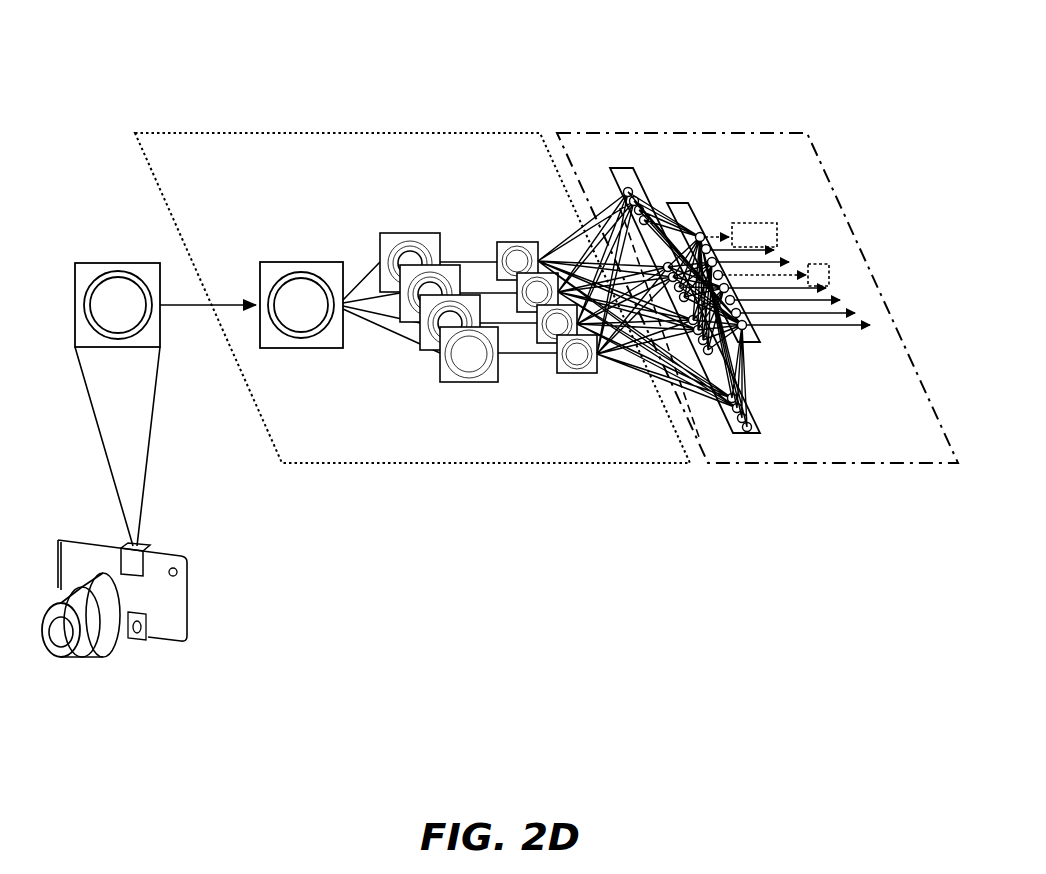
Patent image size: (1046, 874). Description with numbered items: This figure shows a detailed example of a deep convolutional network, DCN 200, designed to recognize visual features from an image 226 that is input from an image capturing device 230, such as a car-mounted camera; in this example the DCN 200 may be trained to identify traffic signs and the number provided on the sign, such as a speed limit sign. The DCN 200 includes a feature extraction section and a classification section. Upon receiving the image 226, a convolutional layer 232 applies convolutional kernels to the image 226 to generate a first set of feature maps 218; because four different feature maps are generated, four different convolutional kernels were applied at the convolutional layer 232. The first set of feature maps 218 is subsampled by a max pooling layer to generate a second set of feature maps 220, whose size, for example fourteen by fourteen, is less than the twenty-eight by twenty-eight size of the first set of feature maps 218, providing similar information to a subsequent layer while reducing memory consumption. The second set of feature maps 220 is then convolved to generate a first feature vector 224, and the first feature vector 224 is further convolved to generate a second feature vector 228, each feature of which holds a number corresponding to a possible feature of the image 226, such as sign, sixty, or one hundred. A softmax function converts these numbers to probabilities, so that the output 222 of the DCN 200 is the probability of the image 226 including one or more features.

The deep convolutional network 200 is at (200, 94).
The first set of feature maps 218 is at (403, 220).
The second set of feature maps 220 is at (501, 220).
The output 222 is at (740, 195).
The first feature vector 224 is at (616, 166).
The image 226 is at (110, 262).
The second feature vector 228 is at (748, 345).
The image capturing device 230 is at (113, 553).
The convolutional layer 232 is at (295, 262).